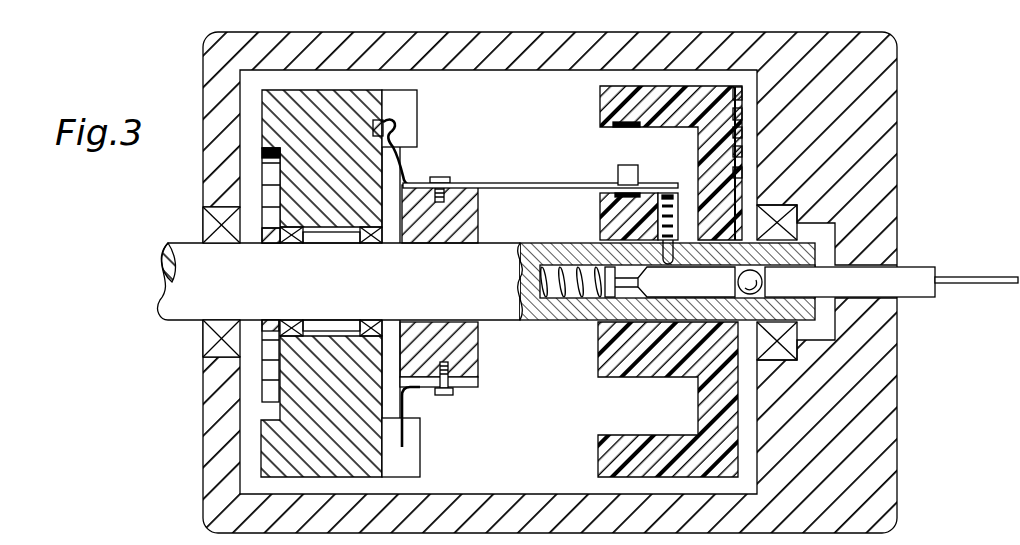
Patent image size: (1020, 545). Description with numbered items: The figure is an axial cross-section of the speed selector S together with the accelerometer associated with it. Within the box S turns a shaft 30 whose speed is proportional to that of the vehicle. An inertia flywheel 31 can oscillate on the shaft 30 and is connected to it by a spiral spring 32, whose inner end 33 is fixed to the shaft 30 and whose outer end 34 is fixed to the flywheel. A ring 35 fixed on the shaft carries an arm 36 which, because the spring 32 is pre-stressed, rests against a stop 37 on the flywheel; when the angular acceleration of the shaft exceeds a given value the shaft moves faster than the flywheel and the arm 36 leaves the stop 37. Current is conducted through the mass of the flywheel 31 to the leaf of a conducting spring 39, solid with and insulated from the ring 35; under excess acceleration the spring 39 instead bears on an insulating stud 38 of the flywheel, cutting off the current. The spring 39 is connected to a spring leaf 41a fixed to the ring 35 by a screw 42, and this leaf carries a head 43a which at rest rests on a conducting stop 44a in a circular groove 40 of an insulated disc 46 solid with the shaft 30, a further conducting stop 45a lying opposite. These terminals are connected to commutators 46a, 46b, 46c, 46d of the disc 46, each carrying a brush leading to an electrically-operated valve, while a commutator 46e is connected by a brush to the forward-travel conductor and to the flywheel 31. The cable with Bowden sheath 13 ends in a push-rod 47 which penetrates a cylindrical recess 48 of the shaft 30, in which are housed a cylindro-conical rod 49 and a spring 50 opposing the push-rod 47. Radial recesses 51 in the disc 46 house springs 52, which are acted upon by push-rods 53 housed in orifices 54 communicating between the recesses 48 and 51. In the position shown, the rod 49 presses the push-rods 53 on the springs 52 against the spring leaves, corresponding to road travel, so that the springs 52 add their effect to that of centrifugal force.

The speed selector S is at (895, 160).
The cable with Bowden sheath 13 is at (1000, 284).
The shaft 30 is at (339, 281).
The inertia flywheel 31 is at (268, 457).
The spiral spring 32 is at (273, 377).
The inner end 33 is at (262, 230).
The outer end 34 is at (262, 148).
The ring 35 is at (479, 352).
The arm 36 is at (404, 410).
The stop 37 is at (404, 461).
The insulating stud 38 is at (395, 166).
The conducting spring 39 is at (408, 166).
The circular groove 40 is at (648, 406).
The spring leaf 41a is at (530, 183).
The screw 42 is at (447, 180).
The head 43a is at (632, 172).
The conducting stop 44a is at (602, 207).
The conducting stop 45a is at (622, 127).
The insulated disc 46 is at (606, 375).
The commutator 46a is at (742, 151).
The commutator 46b is at (742, 133).
The commutator 46c is at (742, 113).
The commutator 46d is at (742, 93).
The commutator 46e is at (742, 175).
The push-rod 47 is at (850, 282).
The cylindrical recess 48 is at (572, 298).
The cylindro-conical rod 49 is at (734, 280).
The spring 50 is at (530, 284).
The radial recesses 51 is at (683, 206).
The springs 52 is at (660, 212).
The push-rods 53 is at (685, 255).
The orifices 54 is at (670, 284).